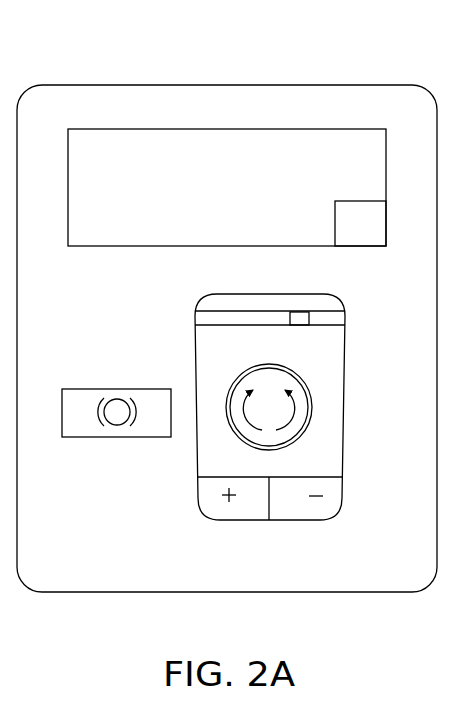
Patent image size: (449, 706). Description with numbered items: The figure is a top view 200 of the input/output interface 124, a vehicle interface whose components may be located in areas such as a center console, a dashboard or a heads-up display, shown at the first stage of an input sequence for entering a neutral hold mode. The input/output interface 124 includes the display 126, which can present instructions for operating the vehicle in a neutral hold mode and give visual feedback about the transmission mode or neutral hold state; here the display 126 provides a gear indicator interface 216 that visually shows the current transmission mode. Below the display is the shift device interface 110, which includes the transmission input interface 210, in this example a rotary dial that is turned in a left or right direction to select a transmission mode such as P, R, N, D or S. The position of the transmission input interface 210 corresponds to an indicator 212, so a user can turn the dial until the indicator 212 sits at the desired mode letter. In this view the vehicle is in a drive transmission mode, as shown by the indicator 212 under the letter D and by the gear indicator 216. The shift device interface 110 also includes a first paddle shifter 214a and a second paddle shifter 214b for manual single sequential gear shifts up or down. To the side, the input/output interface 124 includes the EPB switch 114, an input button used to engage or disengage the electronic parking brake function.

The top view 200 is at (276, 32).
The input/output interface 124 is at (326, 85).
The display 126 is at (300, 128).
The gear indicator interface 216 is at (387, 225).
The shift device interface 110 is at (338, 300).
The indicator 212 is at (298, 311).
The transmission input interface 210 is at (298, 421).
The first paddle shifter 214a is at (229, 521).
The second paddle shifter 214b is at (303, 521).
The EPB switch 114 is at (88, 389).